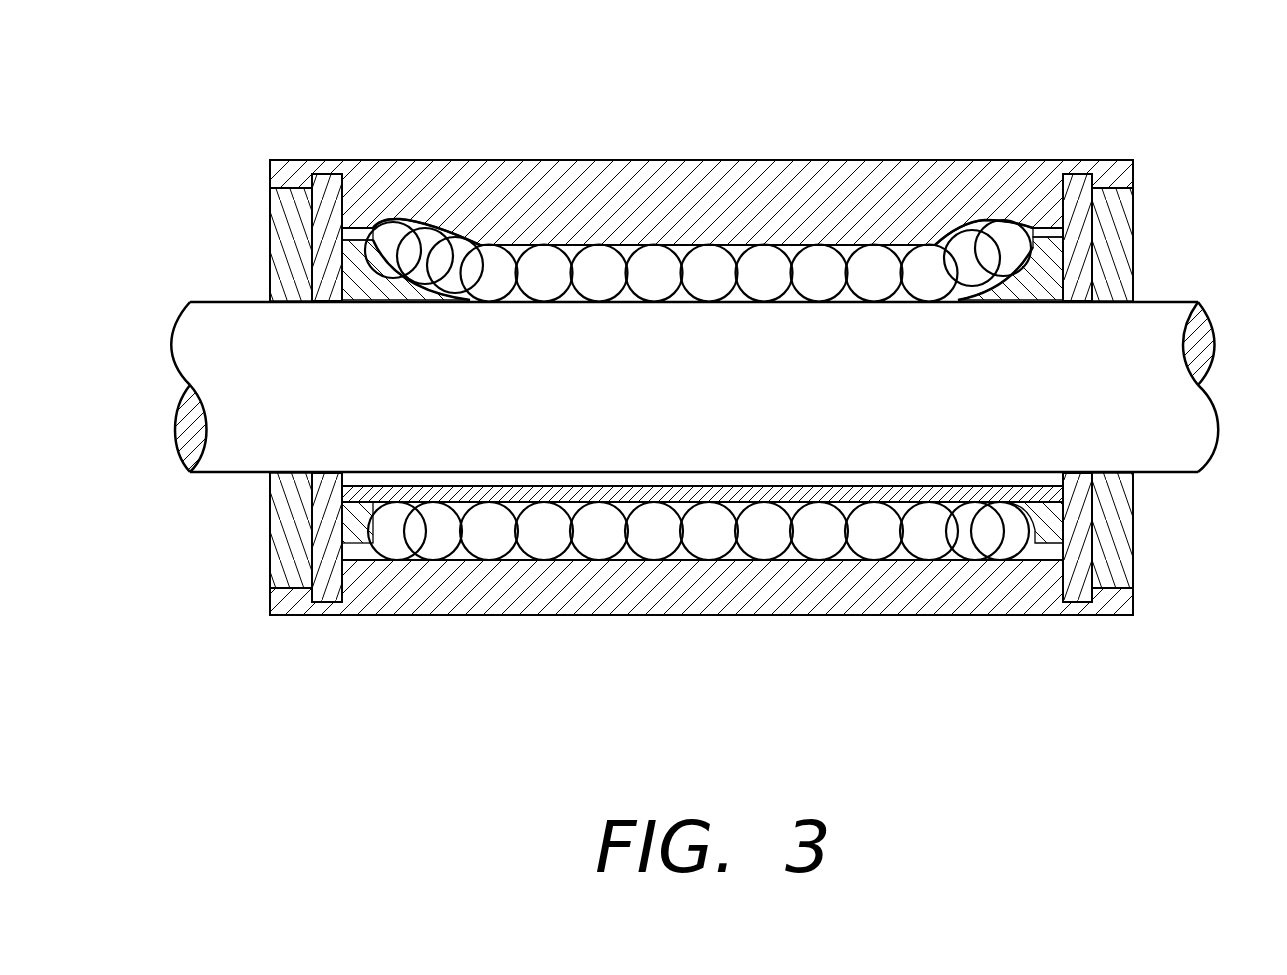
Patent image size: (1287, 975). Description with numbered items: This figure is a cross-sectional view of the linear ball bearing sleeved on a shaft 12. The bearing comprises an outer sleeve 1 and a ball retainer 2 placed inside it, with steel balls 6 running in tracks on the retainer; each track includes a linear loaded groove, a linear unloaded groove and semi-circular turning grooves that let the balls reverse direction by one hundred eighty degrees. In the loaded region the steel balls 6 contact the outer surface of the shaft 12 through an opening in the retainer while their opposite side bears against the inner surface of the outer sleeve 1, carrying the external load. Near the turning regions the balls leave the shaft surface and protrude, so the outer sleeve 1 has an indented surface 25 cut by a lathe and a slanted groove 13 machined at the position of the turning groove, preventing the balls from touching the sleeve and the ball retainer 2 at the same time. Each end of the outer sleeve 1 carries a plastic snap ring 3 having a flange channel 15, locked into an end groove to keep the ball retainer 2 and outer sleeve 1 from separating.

The outer sleeve 1 is at (693, 190).
The ball retainer 2 is at (1045, 253).
The snap ring 3 is at (1123, 212).
The steel balls 6 is at (823, 255).
The shaft 12 is at (247, 322).
The slanted groove 13 is at (400, 220).
The flange channel 15 is at (1078, 193).
The indented surface 25 is at (452, 228).